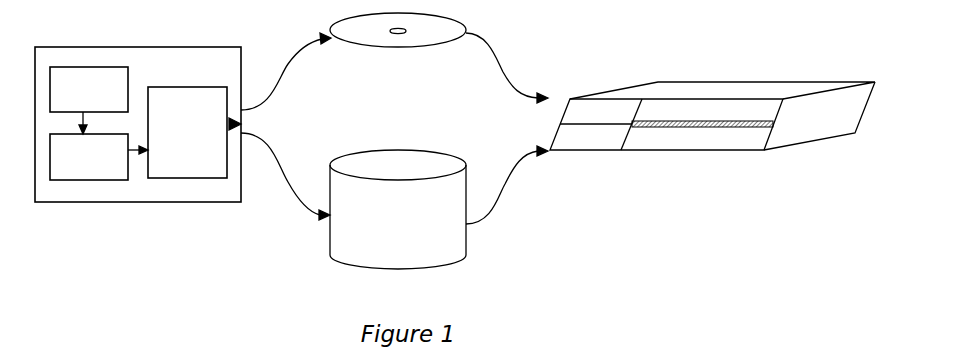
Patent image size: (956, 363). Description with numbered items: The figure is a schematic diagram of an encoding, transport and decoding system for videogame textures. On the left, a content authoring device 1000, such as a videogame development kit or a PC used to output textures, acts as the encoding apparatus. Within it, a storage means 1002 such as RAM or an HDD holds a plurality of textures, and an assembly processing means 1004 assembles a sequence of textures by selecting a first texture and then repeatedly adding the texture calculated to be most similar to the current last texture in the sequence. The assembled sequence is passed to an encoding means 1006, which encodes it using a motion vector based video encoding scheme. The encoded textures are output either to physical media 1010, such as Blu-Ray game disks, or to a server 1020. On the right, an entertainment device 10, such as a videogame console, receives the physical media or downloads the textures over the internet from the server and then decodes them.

The entertainment device 10 is at (712, 101).
The content authoring device 1000 is at (138, 124).
The storage means 1002 is at (89, 100).
The assembly processing means 1004 is at (99, 157).
The encoding means 1006 is at (187, 132).
The physical media 1010 is at (394, 61).
The server 1020 is at (394, 201).